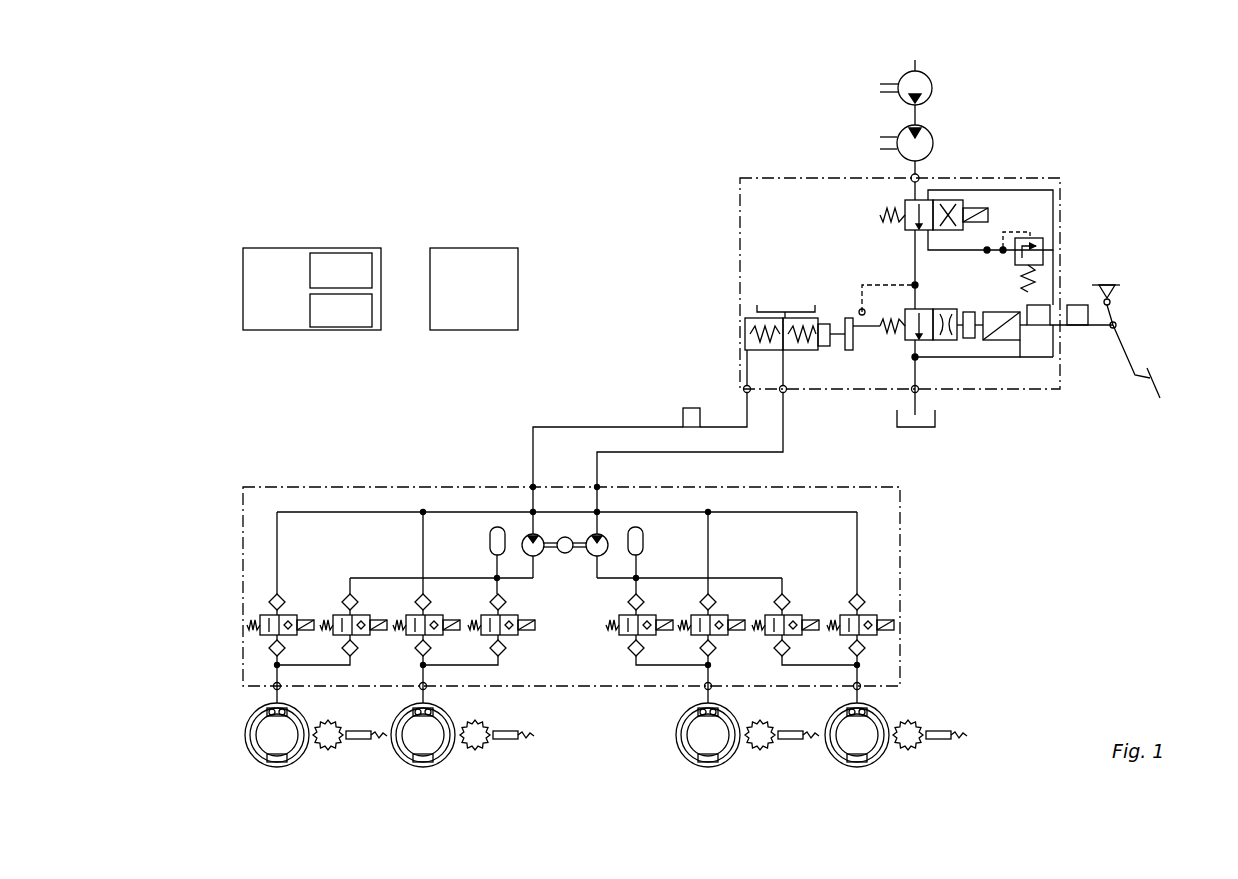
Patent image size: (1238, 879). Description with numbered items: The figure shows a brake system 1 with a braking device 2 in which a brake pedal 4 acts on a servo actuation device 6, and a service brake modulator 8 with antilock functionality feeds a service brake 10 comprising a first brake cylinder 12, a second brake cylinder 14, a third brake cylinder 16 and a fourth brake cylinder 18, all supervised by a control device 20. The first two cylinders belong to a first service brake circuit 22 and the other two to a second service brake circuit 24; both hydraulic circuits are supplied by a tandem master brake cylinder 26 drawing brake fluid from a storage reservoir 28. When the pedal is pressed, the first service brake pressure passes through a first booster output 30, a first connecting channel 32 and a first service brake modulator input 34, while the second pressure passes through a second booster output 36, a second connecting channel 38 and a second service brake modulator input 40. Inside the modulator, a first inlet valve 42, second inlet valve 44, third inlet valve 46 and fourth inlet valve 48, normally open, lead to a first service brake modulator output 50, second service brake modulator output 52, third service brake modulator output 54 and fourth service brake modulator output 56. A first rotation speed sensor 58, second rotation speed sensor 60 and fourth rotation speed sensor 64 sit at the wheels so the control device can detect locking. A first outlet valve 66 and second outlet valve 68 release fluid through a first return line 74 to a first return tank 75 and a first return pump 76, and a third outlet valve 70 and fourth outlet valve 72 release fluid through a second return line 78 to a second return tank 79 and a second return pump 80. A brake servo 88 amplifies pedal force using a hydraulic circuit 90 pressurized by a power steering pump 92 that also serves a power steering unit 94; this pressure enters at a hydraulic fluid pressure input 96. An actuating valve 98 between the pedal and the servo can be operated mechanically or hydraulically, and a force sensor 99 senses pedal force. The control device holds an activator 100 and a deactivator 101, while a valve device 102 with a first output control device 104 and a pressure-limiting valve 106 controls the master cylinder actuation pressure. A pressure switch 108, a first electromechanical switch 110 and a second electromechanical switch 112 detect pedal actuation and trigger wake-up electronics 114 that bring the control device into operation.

The brake system 1 is at (1128, 122).
The braking device 2 is at (722, 140).
The brake pedal 4 is at (1127, 346).
The servo actuation device 6 is at (737, 282).
The service brake modulator 8 is at (900, 559).
The service brake 10 is at (960, 709).
The first brake cylinder 12 is at (298, 712).
The second brake cylinder 14 is at (444, 712).
The third brake cylinder 16 is at (729, 712).
The fourth brake cylinder 18 is at (878, 712).
The control device 20 is at (312, 289).
The first service brake circuit 22 is at (372, 473).
The second service brake circuit 24 is at (815, 481).
The master brake cylinder 26 is at (796, 352).
The storage reservoir 28 is at (825, 308).
The first booster output 30 is at (742, 388).
The first connecting channel 32 is at (540, 426).
The first service brake modulator input 34 is at (530, 486).
The second booster output 36 is at (790, 393).
The second connecting channel 38 is at (726, 453).
The second service brake modulator input 40 is at (600, 487).
The first inlet valve 42 is at (286, 614).
The second inlet valve 44 is at (432, 614).
The third inlet valve 46 is at (717, 614).
The fourth inlet valve 48 is at (866, 614).
The first service brake modulator output 50 is at (273, 694).
The second service brake modulator output 52 is at (419, 694).
The third service brake modulator output 54 is at (704, 694).
The fourth service brake modulator output 56 is at (853, 694).
The first rotation speed sensor 58 is at (336, 749).
The second rotation speed sensor 60 is at (483, 749).
The fourth rotation speed sensor 64 is at (916, 749).
The first outlet valve 66 is at (359, 614).
The second outlet valve 68 is at (507, 614).
The third outlet valve 70 is at (645, 614).
The fourth outlet valve 72 is at (791, 614).
The first return line 74 is at (425, 578).
The first return tank 75 is at (490, 546).
The first return pump 76 is at (541, 556).
The second return line 78 is at (737, 577).
The second return tank 79 is at (643, 550).
The second return pump 80 is at (606, 554).
The brake servo 88 is at (862, 280).
The hydraulic circuit 90 is at (915, 436).
The power steering pump 92 is at (932, 80).
The power steering unit 94 is at (933, 137).
The hydraulic fluid pressure input 96 is at (920, 175).
The actuating valve 98 is at (940, 308).
The force sensor 99 is at (1003, 343).
The activator 100 is at (341, 270).
The deactivator 101 is at (341, 310).
The valve device 102 is at (857, 190).
The first output control device 104 is at (940, 232).
The pressure-limiting valve 106 is at (1042, 237).
The pressure switch 108 is at (683, 413).
The first electromechanical switch 110 is at (1040, 312).
The second electromechanical switch 112 is at (1077, 328).
The wake-up electronics 114 is at (474, 289).